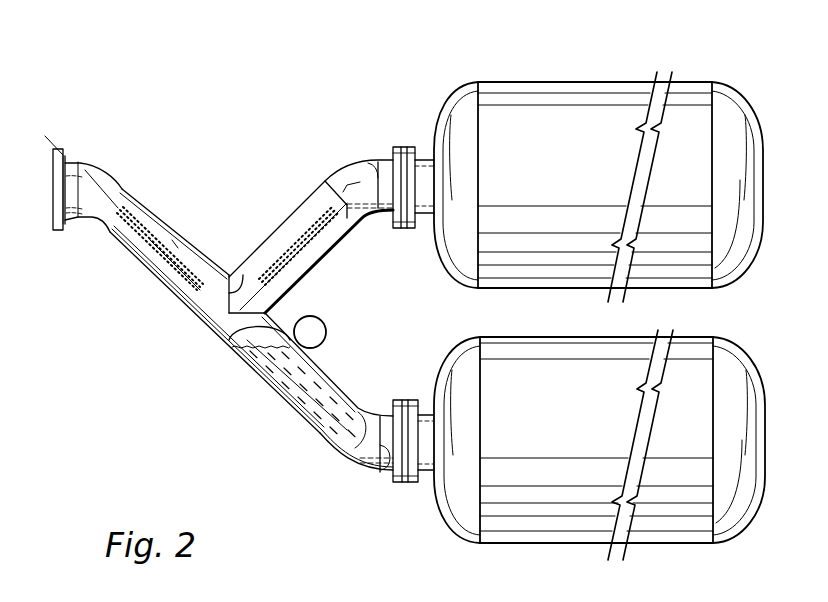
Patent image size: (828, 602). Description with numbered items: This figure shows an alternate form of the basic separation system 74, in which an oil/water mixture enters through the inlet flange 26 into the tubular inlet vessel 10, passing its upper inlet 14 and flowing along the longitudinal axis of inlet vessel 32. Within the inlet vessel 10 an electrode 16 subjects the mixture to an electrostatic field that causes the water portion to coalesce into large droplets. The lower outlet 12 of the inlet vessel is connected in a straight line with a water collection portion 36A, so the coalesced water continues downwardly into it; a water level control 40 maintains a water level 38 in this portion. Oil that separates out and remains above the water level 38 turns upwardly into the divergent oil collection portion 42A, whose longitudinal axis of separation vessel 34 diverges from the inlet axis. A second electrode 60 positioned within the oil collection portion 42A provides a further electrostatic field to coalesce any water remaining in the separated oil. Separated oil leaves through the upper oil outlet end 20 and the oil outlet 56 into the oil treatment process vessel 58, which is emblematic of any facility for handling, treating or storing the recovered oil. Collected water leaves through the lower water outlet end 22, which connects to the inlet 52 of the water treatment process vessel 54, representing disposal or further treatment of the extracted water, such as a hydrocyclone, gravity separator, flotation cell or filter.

The inlet vessel 10 is at (143, 273).
The lower outlet 12 is at (243, 276).
The upper inlet 14 is at (122, 189).
The electrode 16 is at (176, 243).
The upper oil outlet end 20 is at (378, 177).
The lower water outlet end 22 is at (387, 472).
The inlet flange 26 is at (62, 228).
The longitudinal axis of inlet vessel 32 is at (180, 315).
The longitudinal axis of separation vessel 34 is at (343, 166).
The water collection portion 36A is at (284, 412).
The water level 38 is at (231, 337).
The water level control 40 is at (326, 327).
The oil collection portion 42A is at (297, 208).
The inlet of water treatment process vessel 52 is at (413, 488).
The water treatment process vessel 54 is at (522, 337).
The oil outlet 56 is at (400, 146).
The oil treatment process vessel 58 is at (566, 81).
The second electrode 60 is at (329, 251).
The separation system 74 is at (232, 197).